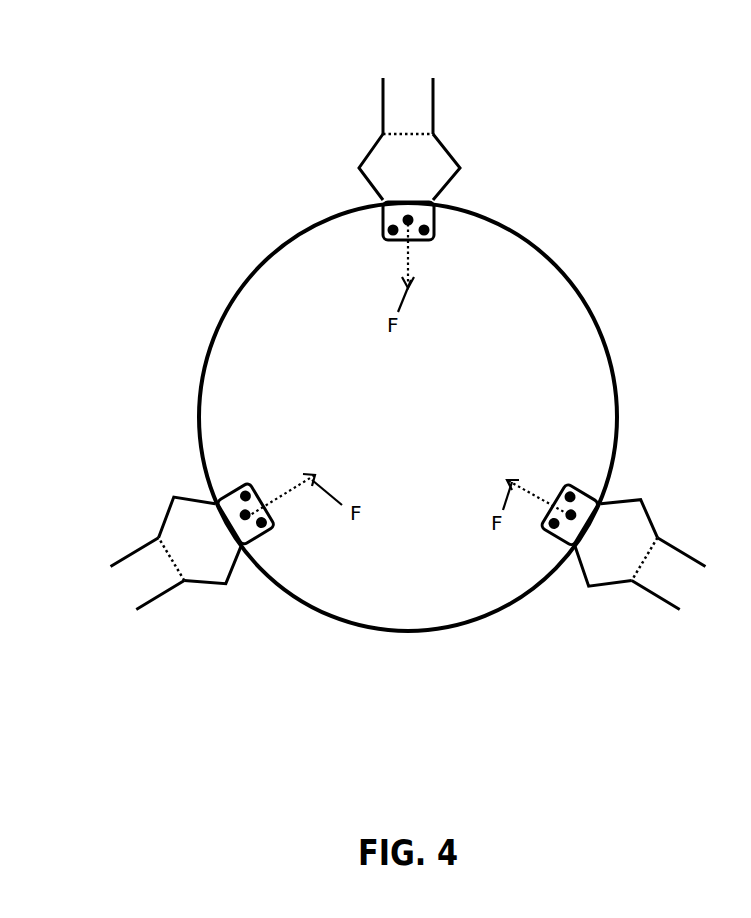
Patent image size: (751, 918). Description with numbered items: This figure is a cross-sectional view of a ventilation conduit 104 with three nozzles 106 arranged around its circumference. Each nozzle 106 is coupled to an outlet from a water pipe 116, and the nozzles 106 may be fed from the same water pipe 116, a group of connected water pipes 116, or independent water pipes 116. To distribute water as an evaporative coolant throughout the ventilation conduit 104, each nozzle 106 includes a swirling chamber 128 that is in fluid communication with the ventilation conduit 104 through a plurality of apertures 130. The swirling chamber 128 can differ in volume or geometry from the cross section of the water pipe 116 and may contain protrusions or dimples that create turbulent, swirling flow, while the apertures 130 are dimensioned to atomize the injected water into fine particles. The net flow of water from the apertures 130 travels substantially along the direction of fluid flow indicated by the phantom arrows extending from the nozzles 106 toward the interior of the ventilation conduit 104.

The ventilation conduit 104 is at (390, 414).
The nozzle 106 is at (485, 150).
The water pipe 116 is at (418, 106).
The swirling chamber 128 is at (376, 161).
The apertures 130 is at (385, 238).